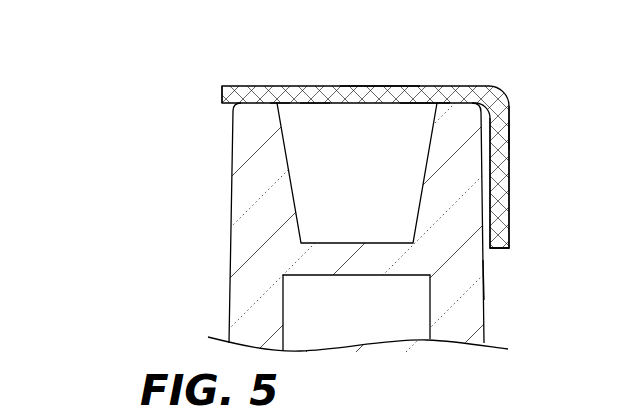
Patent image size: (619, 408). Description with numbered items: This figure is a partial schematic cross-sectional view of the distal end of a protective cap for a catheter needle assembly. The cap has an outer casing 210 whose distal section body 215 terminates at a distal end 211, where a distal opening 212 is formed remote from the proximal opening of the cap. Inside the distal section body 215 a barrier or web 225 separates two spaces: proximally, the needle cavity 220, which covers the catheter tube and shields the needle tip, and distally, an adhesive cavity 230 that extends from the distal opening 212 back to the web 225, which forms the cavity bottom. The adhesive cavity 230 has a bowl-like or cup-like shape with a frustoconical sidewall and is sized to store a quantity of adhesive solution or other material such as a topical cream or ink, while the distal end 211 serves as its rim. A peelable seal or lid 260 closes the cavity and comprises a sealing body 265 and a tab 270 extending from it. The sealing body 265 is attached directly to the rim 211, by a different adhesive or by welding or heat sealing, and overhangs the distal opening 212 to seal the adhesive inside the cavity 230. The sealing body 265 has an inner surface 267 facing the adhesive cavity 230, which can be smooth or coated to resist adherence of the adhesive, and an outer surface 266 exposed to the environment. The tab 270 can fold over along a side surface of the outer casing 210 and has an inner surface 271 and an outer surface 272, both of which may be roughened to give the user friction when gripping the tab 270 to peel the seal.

The outer casing 210 is at (218, 236).
The distal end 211 is at (237, 101).
The distal opening 212 is at (282, 105).
The distal section body 215 is at (484, 282).
The needle cavity 220 is at (317, 299).
The barrier or web 225 is at (368, 263).
The adhesive cavity 230 is at (395, 142).
The peelable seal or lid 260 is at (333, 56).
The sealing body 265 is at (378, 80).
The outer surface 266 is at (417, 95).
The inner surface 267 is at (315, 105).
The tab 270 is at (523, 173).
The inner surface of tab 271 is at (487, 208).
The outer surface of tab 272 is at (510, 133).